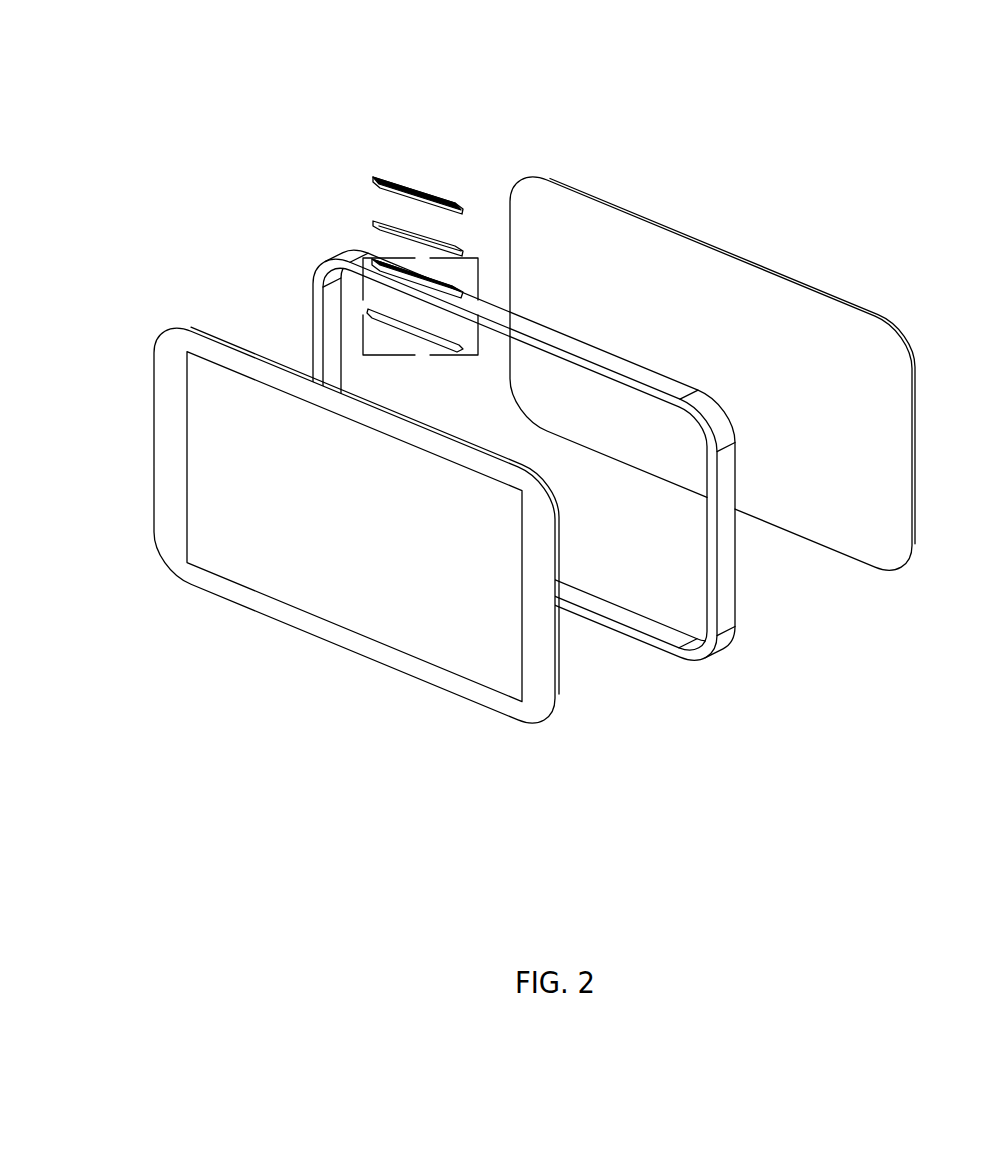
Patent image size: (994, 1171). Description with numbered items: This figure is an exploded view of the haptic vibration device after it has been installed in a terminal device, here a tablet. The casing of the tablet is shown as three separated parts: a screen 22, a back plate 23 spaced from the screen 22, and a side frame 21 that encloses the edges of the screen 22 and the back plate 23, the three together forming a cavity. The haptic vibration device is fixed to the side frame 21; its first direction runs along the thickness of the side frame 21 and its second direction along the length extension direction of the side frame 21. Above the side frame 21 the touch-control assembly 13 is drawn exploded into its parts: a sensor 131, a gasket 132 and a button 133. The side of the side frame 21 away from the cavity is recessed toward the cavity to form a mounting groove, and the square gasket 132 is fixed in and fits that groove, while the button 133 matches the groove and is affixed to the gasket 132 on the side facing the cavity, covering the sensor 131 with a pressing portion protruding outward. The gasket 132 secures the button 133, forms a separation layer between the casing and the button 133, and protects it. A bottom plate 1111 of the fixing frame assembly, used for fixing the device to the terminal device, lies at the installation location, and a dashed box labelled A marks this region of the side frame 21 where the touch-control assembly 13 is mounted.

The touch-control assembly 13 is at (305, 153).
The sensor 131 is at (370, 257).
The gasket 132 is at (372, 219).
The button 133 is at (378, 174).
The bottom plate 1111 is at (371, 311).
The region A is at (360, 337).
The side frame 21 is at (500, 652).
The screen 22 is at (627, 618).
The back plate 23 is at (765, 505).